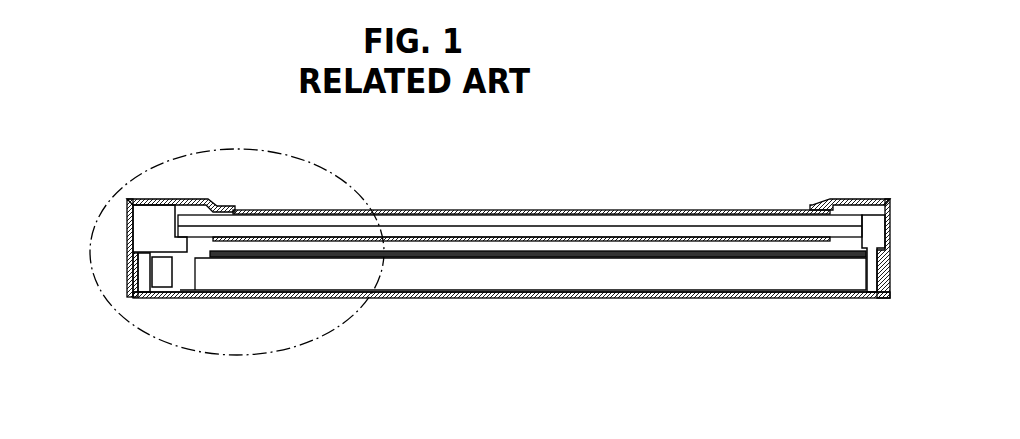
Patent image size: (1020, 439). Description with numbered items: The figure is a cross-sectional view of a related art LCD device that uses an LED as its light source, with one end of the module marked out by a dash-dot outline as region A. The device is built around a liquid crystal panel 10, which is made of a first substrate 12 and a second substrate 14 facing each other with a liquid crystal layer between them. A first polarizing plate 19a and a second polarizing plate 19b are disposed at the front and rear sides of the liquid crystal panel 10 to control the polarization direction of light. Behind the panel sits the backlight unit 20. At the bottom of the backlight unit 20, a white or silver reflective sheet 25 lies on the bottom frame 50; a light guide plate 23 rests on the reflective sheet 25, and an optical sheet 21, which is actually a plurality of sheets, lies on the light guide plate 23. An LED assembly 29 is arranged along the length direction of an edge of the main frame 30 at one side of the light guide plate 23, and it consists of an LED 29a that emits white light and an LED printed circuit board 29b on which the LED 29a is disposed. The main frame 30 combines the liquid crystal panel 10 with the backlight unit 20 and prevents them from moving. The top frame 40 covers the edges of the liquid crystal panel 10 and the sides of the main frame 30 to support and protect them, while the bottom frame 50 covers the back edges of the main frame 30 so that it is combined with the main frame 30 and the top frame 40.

The enlarged region A is at (110, 303).
The liquid crystal panel 10 is at (520, 177).
The first substrate 12 is at (488, 232).
The second substrate 14 is at (447, 215).
The first polarizing plate 19a is at (632, 240).
The second polarizing plate 19b is at (588, 214).
The backlight unit 20 is at (511, 344).
The optical sheet 21 is at (325, 258).
The light guide plate 23 is at (285, 278).
The reflective sheet 25 is at (247, 292).
The LED assembly 29 is at (168, 331).
The LED 29a is at (162, 280).
The LED printed circuit board 29b is at (143, 288).
The main frame 30 is at (153, 227).
The top frame 40 is at (183, 200).
The bottom frame 50 is at (518, 300).